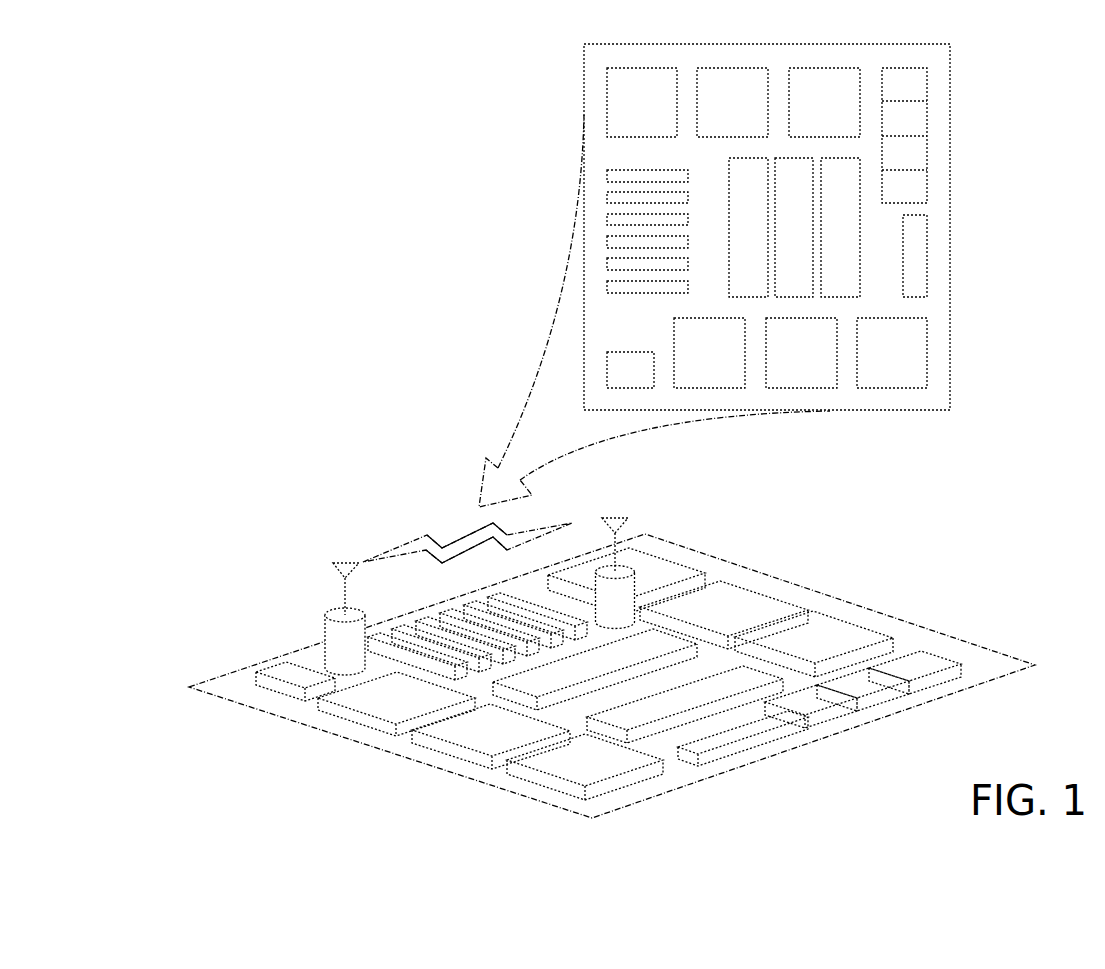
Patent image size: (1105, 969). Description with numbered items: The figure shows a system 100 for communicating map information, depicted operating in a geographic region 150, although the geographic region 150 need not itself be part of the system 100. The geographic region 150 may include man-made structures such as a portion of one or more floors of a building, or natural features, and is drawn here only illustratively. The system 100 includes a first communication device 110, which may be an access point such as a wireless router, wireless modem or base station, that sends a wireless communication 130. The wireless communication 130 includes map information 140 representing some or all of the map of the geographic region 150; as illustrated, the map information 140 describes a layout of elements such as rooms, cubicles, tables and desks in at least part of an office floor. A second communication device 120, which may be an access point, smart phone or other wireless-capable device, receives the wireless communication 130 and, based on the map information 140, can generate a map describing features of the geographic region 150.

The system 100 is at (316, 190).
The first communication device 110 is at (325, 596).
The second communication device 120 is at (633, 556).
The wireless communication 130 is at (412, 525).
The map information 140 is at (932, 41).
The geographic region 150 is at (853, 597).